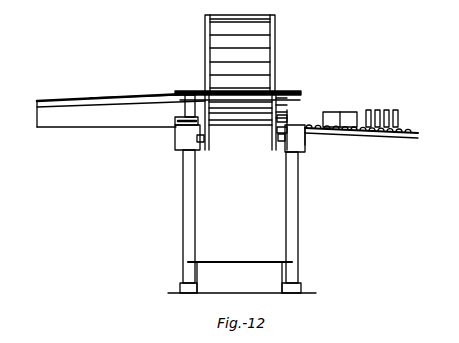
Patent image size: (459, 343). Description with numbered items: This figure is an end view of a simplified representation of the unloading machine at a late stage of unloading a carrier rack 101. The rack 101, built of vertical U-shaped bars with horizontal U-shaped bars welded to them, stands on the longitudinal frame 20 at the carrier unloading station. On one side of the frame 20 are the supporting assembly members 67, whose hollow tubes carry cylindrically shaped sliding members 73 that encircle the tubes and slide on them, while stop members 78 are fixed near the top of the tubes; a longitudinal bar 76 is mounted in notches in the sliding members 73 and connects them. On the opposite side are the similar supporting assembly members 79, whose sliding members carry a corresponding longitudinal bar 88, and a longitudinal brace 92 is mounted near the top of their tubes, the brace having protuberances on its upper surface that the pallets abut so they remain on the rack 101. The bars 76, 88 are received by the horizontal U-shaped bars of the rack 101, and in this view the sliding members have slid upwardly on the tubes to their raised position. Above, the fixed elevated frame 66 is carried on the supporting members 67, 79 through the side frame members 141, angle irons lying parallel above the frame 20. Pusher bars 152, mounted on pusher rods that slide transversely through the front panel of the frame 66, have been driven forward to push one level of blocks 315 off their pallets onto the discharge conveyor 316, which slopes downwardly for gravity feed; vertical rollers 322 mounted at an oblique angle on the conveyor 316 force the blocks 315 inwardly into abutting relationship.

The carrier rack 101 is at (304, 57).
The side frame members 141 is at (143, 94).
The elevated frame 66 is at (103, 128).
The stop members 78 is at (178, 125).
The sliding members 73 is at (176, 150).
The longitudinal bar 76 is at (204, 143).
The longitudinal bar 88 is at (276, 137).
The supporting assembly members 67 is at (183, 215).
The supporting assembly members 79 is at (326, 226).
The longitudinal frame 20 is at (257, 285).
The longitudinal brace 92 is at (288, 126).
The pusher bars 152 is at (291, 124).
The blocks 315 is at (346, 111).
The vertical rollers 322 is at (370, 111).
The discharge conveyor 316 is at (373, 139).